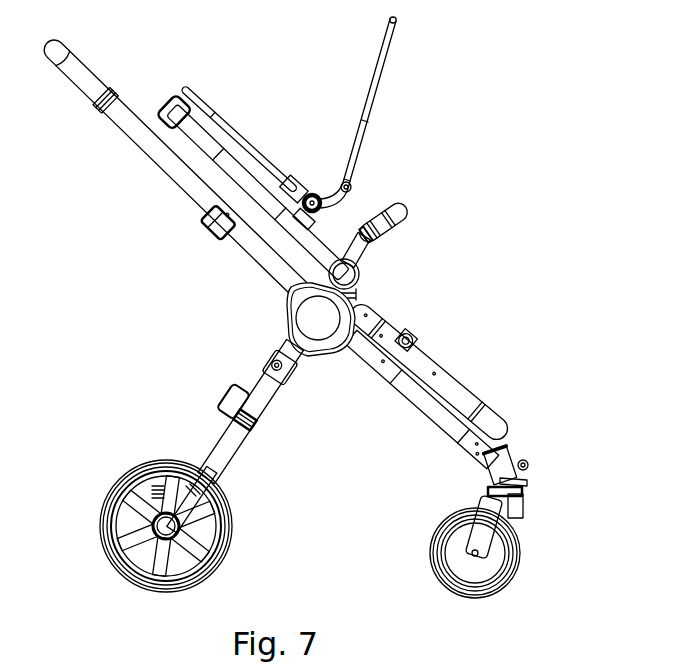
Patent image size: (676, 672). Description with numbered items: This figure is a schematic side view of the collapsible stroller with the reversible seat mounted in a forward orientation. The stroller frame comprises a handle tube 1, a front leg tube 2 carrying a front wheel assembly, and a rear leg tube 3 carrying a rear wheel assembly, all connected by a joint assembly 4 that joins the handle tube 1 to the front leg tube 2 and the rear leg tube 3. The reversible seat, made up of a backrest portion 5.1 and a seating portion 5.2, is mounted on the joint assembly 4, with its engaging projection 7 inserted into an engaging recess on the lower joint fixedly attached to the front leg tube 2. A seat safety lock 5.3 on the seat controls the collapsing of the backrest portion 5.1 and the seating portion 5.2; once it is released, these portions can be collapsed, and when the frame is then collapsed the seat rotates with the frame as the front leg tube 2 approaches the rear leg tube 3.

The handle tube 1 is at (212, 193).
The front leg tube 2 is at (412, 405).
The rear leg tube 3 is at (262, 387).
The joint assembly 4 is at (312, 314).
The backrest portion 5.1 is at (303, 236).
The seating portion 5.2 is at (380, 313).
The seat safety lock 5.3 is at (159, 107).
The engaging projection 7 is at (356, 293).